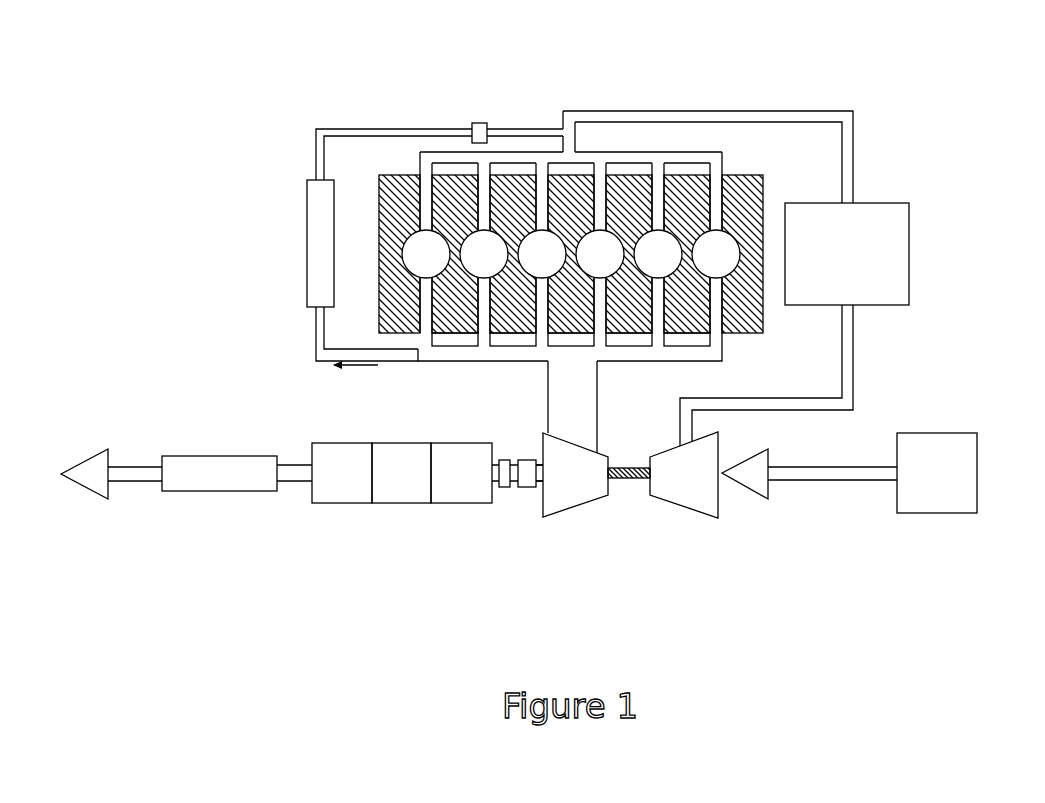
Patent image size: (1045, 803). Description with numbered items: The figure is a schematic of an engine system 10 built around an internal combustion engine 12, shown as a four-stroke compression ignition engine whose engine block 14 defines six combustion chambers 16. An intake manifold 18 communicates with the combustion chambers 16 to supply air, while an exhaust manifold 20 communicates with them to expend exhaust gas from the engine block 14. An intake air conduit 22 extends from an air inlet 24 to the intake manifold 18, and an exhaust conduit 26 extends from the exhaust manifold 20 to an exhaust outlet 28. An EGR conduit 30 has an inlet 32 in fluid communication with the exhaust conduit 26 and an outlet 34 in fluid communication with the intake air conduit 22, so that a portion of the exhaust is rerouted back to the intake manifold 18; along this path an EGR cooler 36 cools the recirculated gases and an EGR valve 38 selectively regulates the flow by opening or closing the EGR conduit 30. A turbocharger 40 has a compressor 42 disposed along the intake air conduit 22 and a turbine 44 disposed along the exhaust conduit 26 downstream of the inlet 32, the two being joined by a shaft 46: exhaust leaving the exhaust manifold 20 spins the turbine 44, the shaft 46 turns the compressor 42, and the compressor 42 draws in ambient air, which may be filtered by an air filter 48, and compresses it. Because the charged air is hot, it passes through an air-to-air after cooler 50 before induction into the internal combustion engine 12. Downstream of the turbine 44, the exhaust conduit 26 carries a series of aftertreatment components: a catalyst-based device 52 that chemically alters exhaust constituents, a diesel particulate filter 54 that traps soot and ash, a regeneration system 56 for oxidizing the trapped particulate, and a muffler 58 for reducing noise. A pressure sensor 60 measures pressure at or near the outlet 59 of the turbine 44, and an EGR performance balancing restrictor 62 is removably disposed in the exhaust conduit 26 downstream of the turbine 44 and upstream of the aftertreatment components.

The engine system 10 is at (769, 33).
The internal combustion engine 12 is at (768, 162).
The engine block 14 is at (763, 322).
The combustion chambers 16 is at (416, 264).
The intake manifold 18 is at (522, 152).
The exhaust manifold 20 is at (455, 362).
The intake air conduit 22 is at (811, 111).
The air inlet 24 is at (987, 431).
The exhaust conduit 26 is at (600, 408).
The exhaust outlet 28 is at (82, 494).
The EGR conduit 30 is at (347, 128).
The inlet of the EGR conduit 32 is at (416, 367).
The outlet of the EGR conduit 34 is at (559, 104).
The EGR cooler 36 is at (307, 236).
The EGR valve 38 is at (479, 123).
The turbocharger 40 is at (623, 492).
The compressor 42 is at (689, 514).
The turbine 44 is at (556, 515).
The shaft 46 is at (638, 479).
The air filter 48 is at (977, 470).
The air-to-air after cooler 50 is at (909, 236).
The catalyst-based device 52 is at (396, 504).
The diesel particulate filter 54 is at (336, 504).
The regeneration system 56 is at (458, 504).
The muffler 58 is at (210, 492).
The outlet of the turbine 59 is at (539, 490).
The pressure sensor 60 is at (526, 460).
The EGR performance balancing restrictor 62 is at (502, 460).